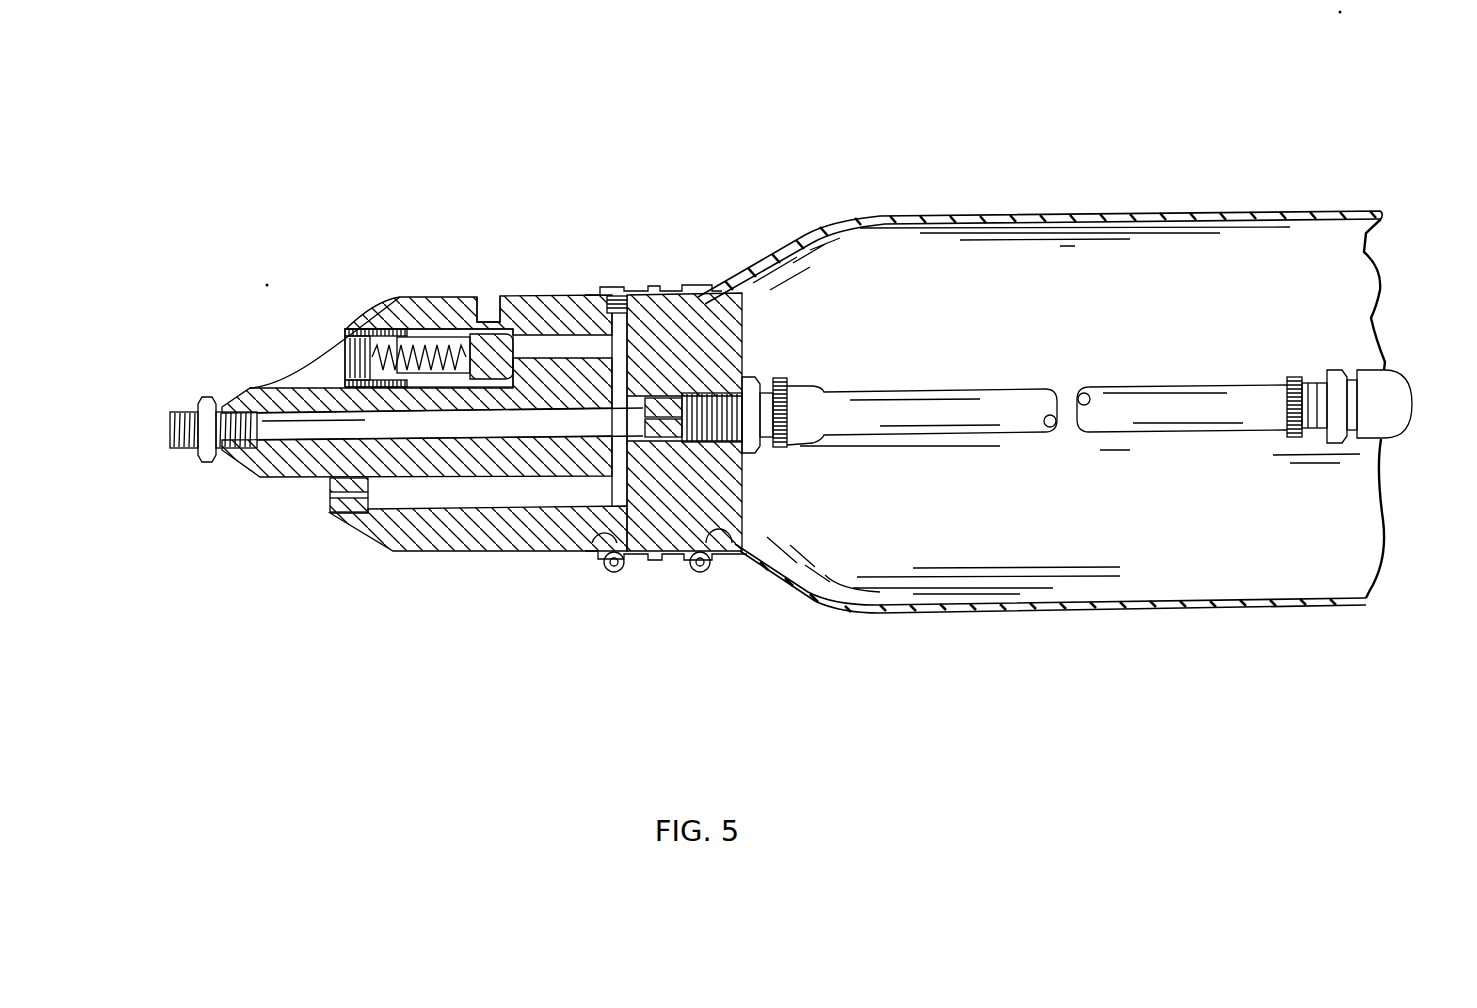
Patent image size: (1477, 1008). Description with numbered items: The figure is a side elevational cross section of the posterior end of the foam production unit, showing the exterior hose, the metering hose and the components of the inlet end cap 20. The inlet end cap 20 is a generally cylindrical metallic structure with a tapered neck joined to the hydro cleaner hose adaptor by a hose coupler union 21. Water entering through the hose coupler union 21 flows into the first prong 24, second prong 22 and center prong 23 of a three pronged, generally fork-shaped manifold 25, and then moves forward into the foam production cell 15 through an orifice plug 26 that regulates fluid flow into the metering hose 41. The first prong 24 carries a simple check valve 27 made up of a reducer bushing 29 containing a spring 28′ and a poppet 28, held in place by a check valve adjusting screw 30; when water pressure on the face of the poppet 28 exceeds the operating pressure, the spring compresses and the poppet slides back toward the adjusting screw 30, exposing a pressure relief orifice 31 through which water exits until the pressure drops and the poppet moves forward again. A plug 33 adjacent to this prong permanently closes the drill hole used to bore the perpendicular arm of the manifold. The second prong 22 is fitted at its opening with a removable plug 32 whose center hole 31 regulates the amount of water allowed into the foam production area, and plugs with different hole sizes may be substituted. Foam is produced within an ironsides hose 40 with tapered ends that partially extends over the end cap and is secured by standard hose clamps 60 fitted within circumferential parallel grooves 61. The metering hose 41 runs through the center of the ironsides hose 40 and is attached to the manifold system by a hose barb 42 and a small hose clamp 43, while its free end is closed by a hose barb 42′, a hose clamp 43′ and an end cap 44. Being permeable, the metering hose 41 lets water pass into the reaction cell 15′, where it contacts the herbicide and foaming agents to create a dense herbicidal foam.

The foam production cell 15 is at (780, 160).
The reaction cell 15′ is at (1017, 553).
The inlet end cap 20 is at (267, 388).
The hose coupler union 21 is at (192, 412).
The second prong 22 is at (417, 493).
The center prong 23 is at (463, 440).
The first prong 24 is at (555, 352).
The manifold 25 is at (624, 505).
The orifice plug 26 is at (728, 492).
The check valve 27 is at (233, 222).
The poppet 28 is at (486, 340).
The spring 28′ is at (438, 340).
The reducer bushing 29 is at (380, 316).
The check valve adjusting screw 30 is at (345, 358).
The pressure relief orifice 31 is at (487, 298).
The removable plug 32 is at (340, 513).
The plug 33 is at (615, 296).
The ironsides hose 40 is at (1210, 607).
The metering hose 41 is at (930, 422).
The hose barb 42 is at (740, 467).
The hose barb 42′ is at (1343, 373).
The hose clamp 43 is at (777, 377).
The hose clamp 43′ is at (1290, 377).
The end cap 44 is at (1392, 403).
The hose clamps 60 is at (612, 572).
The circumferential parallel grooves 61 is at (578, 548).